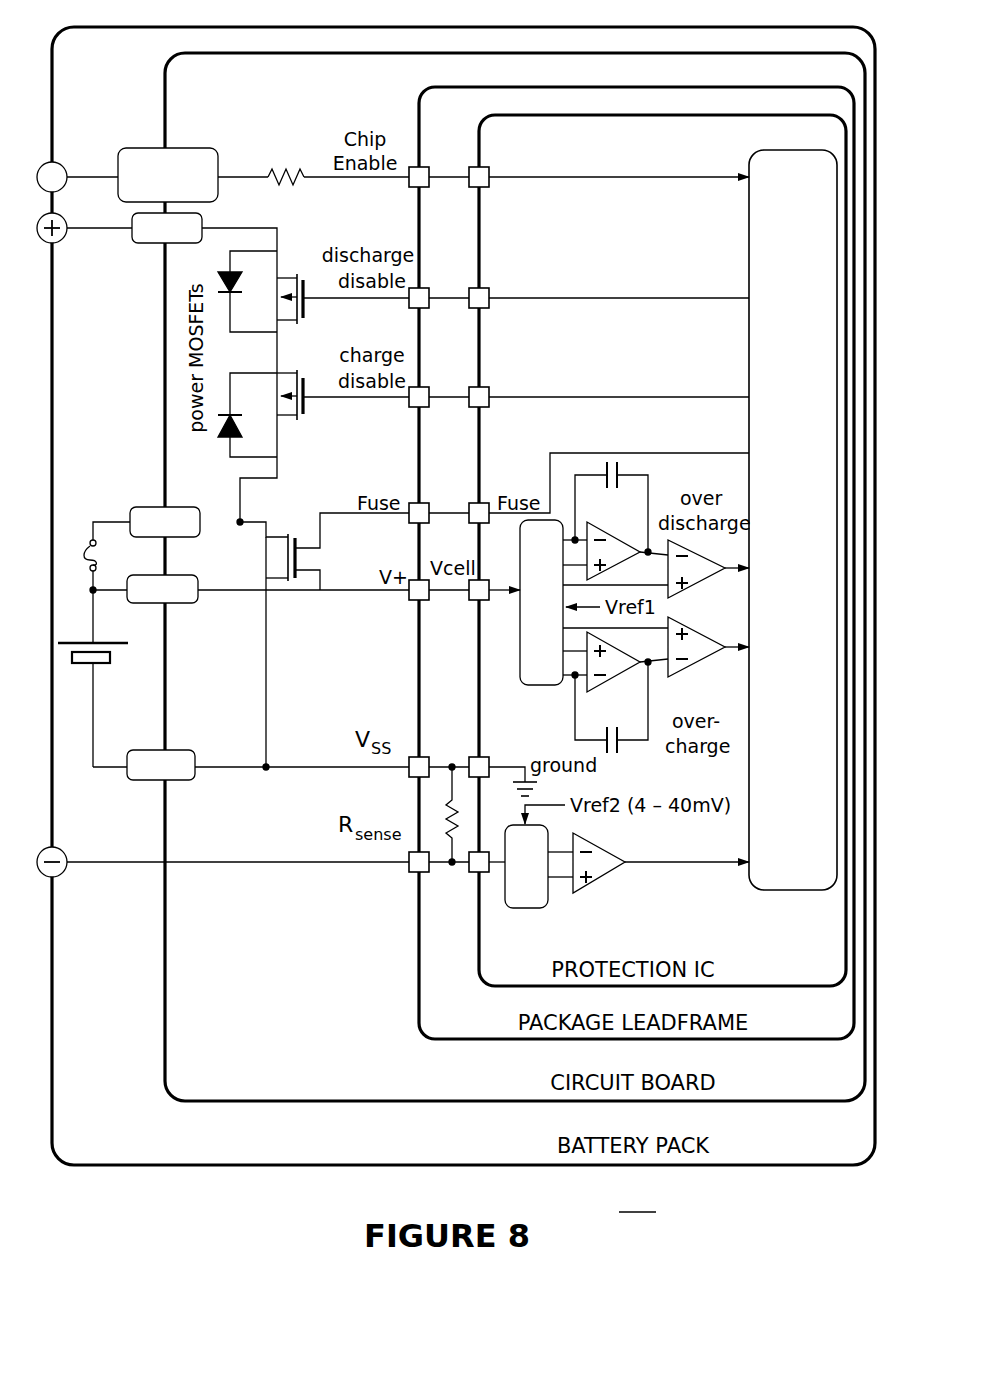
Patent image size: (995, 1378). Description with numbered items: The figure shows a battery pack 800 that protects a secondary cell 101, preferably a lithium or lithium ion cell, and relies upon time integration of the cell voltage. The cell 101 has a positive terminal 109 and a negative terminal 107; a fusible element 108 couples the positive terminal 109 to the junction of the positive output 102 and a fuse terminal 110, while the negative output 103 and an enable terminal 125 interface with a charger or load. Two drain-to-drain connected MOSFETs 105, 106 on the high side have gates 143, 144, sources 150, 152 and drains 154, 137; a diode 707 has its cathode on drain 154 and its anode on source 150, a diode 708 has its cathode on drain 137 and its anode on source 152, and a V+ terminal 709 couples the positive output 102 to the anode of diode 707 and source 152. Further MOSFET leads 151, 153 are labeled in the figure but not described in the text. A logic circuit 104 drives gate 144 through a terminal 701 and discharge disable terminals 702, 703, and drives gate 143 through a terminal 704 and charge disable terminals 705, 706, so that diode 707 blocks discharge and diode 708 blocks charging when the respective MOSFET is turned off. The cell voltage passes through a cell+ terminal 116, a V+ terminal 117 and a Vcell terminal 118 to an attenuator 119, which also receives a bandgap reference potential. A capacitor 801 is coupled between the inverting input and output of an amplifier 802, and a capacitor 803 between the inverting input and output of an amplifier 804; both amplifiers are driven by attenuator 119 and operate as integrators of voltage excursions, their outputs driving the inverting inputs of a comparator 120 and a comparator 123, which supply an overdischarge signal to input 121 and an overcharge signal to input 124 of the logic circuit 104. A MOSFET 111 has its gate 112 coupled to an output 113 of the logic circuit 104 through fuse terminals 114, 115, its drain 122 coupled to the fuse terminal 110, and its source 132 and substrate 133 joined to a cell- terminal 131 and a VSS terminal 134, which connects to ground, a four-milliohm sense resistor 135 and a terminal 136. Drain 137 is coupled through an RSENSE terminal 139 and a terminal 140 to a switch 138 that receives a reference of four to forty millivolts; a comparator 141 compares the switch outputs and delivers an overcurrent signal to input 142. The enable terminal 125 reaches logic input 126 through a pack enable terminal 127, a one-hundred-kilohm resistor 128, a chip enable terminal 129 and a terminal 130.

The secondary cell 101 is at (109, 698).
The positive output 102 is at (48, 243).
The negative output 103 is at (46, 876).
The logic circuit 104 is at (752, 156).
The MOSFET 105 is at (323, 404).
The MOSFET 106 is at (324, 295).
The negative terminal 107 is at (111, 659).
The fusible element 108 is at (100, 560).
The positive terminal 109 is at (122, 630).
The fuse terminal 110 is at (196, 508).
The MOSFET 111 is at (309, 627).
The gate 112 is at (300, 556).
The output 113 is at (751, 453).
The fuse terminal 114 is at (415, 524).
The fuse terminal 115 is at (481, 524).
The cell+ terminal 116 is at (200, 592).
The V+ terminal 117 is at (416, 601).
The Vcell terminal 118 is at (477, 601).
The attenuator 119 is at (540, 686).
The comparator 120 is at (708, 582).
The input 121 is at (751, 568).
The drain 122 is at (277, 524).
The comparator 123 is at (705, 660).
The input 124 is at (751, 647).
The enable terminal 125 is at (63, 165).
The input 126 is at (751, 177).
The pack enable terminal 127 is at (171, 148).
The 100K ohm resistor 128 is at (266, 170).
The chip enable terminal 129 is at (425, 167).
The terminal 130 is at (484, 167).
The cell- terminal 131 is at (196, 758).
The source 132 is at (297, 576).
The substrate 133 is at (286, 557).
The VSS terminal 134 is at (424, 757).
The sense resistor 135 is at (462, 826).
The terminal 136 is at (482, 757).
The drain 137 is at (297, 375).
The switch 138 is at (541, 908).
The RSENSE terminal 139 is at (418, 873).
The terminal 140 is at (475, 873).
The comparator 141 is at (608, 882).
The input 142 is at (751, 862).
The gate 143 is at (305, 414).
The gate 144 is at (305, 314).
The source 150 is at (281, 422).
The MOSFET substrate lead 151 is at (283, 397).
The source 152 is at (283, 279).
The MOSFET substrate lead 153 is at (286, 305).
The drain 154 is at (283, 374).
The terminal 701 is at (751, 298).
The discharge disable terminal 702 is at (424, 288).
The discharge disable terminal 703 is at (483, 288).
The terminal 704 is at (751, 397).
The charge disable terminal 705 is at (423, 408).
The charge disable terminal 706 is at (481, 408).
The diode 707 is at (225, 284).
The diode 708 is at (219, 426).
The V+ terminal 709 is at (204, 226).
The battery pack 800 is at (463, 619).
The capacitor 801 is at (619, 466).
The amplifier 802 is at (614, 543).
The capacitor 803 is at (619, 752).
The amplifier 804 is at (617, 692).